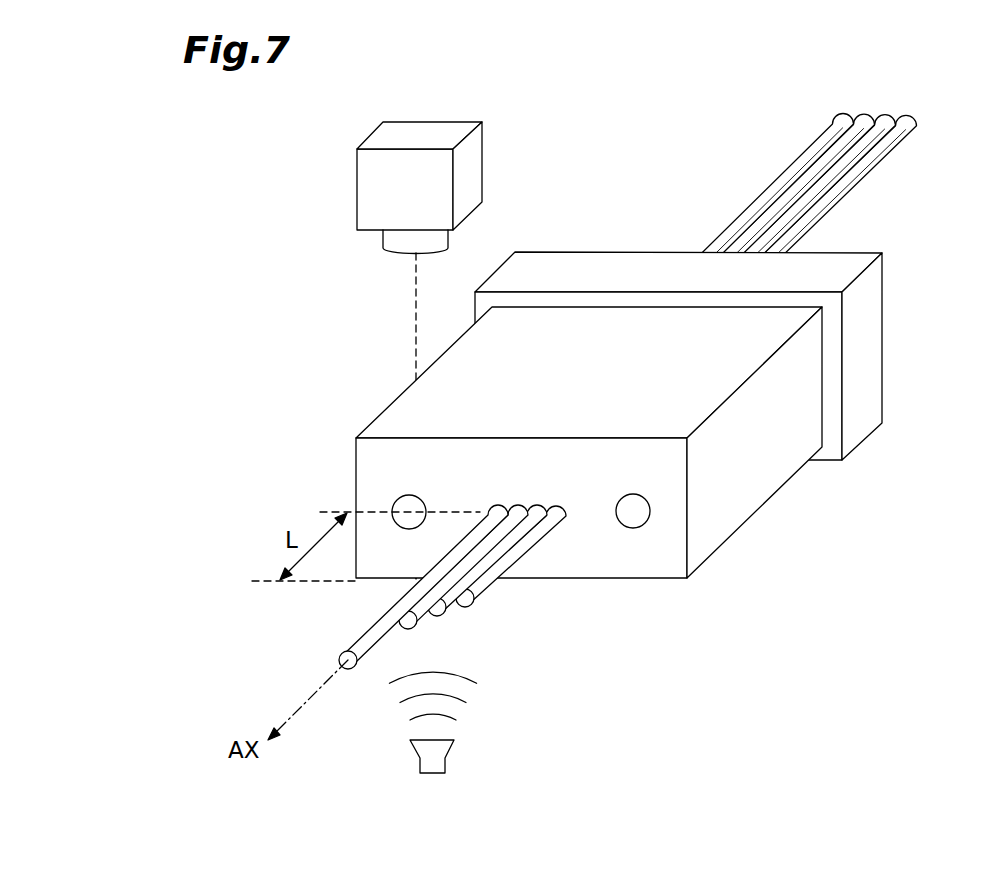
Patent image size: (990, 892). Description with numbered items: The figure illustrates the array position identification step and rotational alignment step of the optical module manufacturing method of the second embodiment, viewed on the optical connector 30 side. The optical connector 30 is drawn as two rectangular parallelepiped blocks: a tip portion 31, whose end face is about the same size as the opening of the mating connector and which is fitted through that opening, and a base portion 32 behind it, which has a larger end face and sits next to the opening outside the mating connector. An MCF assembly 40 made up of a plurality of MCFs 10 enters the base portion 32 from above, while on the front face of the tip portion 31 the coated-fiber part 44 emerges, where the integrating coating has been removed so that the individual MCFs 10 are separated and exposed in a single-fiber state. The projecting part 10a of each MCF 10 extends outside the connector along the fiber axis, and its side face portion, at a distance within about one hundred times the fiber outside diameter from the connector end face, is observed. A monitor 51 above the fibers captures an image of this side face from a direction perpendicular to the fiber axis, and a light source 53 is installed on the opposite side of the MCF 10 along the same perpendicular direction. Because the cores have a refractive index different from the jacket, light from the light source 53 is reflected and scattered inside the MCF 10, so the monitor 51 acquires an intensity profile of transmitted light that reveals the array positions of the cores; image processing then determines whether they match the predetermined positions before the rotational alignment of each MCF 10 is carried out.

The monitor 51 is at (482, 165).
The MCF 10 is at (805, 179).
The MCF assembly 40 is at (788, 147).
The optical connector 30 is at (673, 415).
The tip portion 31 is at (767, 465).
The base portion 32 is at (867, 380).
The coated-fiber part 44 is at (444, 618).
The projecting part 10a is at (350, 669).
The light source 53 is at (437, 775).